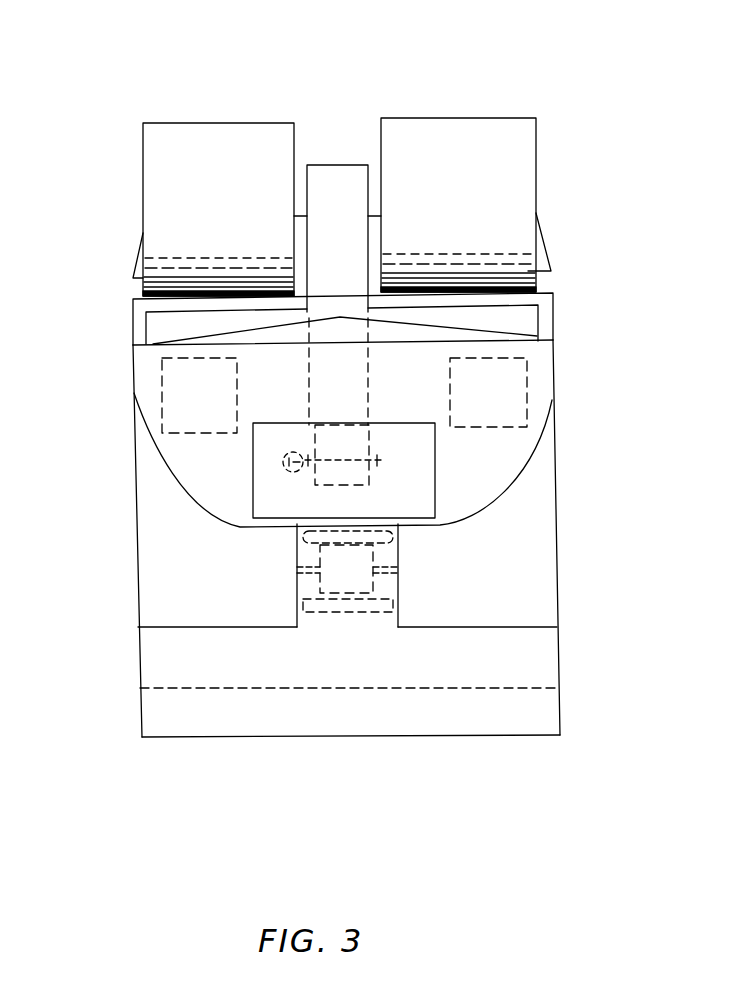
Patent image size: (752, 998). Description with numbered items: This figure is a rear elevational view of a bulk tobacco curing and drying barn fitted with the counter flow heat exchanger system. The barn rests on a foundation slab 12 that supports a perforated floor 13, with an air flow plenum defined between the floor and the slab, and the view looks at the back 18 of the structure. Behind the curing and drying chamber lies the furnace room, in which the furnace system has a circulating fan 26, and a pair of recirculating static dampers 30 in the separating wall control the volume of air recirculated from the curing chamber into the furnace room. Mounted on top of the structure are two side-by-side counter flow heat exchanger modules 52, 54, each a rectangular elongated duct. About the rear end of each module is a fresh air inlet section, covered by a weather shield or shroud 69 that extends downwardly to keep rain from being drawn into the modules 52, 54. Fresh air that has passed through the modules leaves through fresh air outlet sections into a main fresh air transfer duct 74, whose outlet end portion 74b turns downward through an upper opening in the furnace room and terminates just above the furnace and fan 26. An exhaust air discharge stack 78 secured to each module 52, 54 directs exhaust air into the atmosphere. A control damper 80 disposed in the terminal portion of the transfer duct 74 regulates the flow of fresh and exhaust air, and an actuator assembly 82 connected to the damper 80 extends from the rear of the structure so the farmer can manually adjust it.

The foundation slab 12 is at (318, 737).
The perforated floor 13 is at (220, 688).
The back 18 is at (483, 470).
The circulating fan 26 is at (400, 533).
The recirculating static dampers 30 is at (200, 403).
The counter flow heat exchanger module 52 is at (128, 170).
The counter flow heat exchanger module 54 is at (555, 188).
The weather shield or shroud 69 is at (138, 252).
The main fresh air transfer duct 74 is at (330, 135).
The outlet end portion 74b is at (337, 247).
The exhaust air discharge stack 78 is at (157, 155).
The control damper 80 is at (313, 480).
The actuator assembly 82 is at (283, 475).